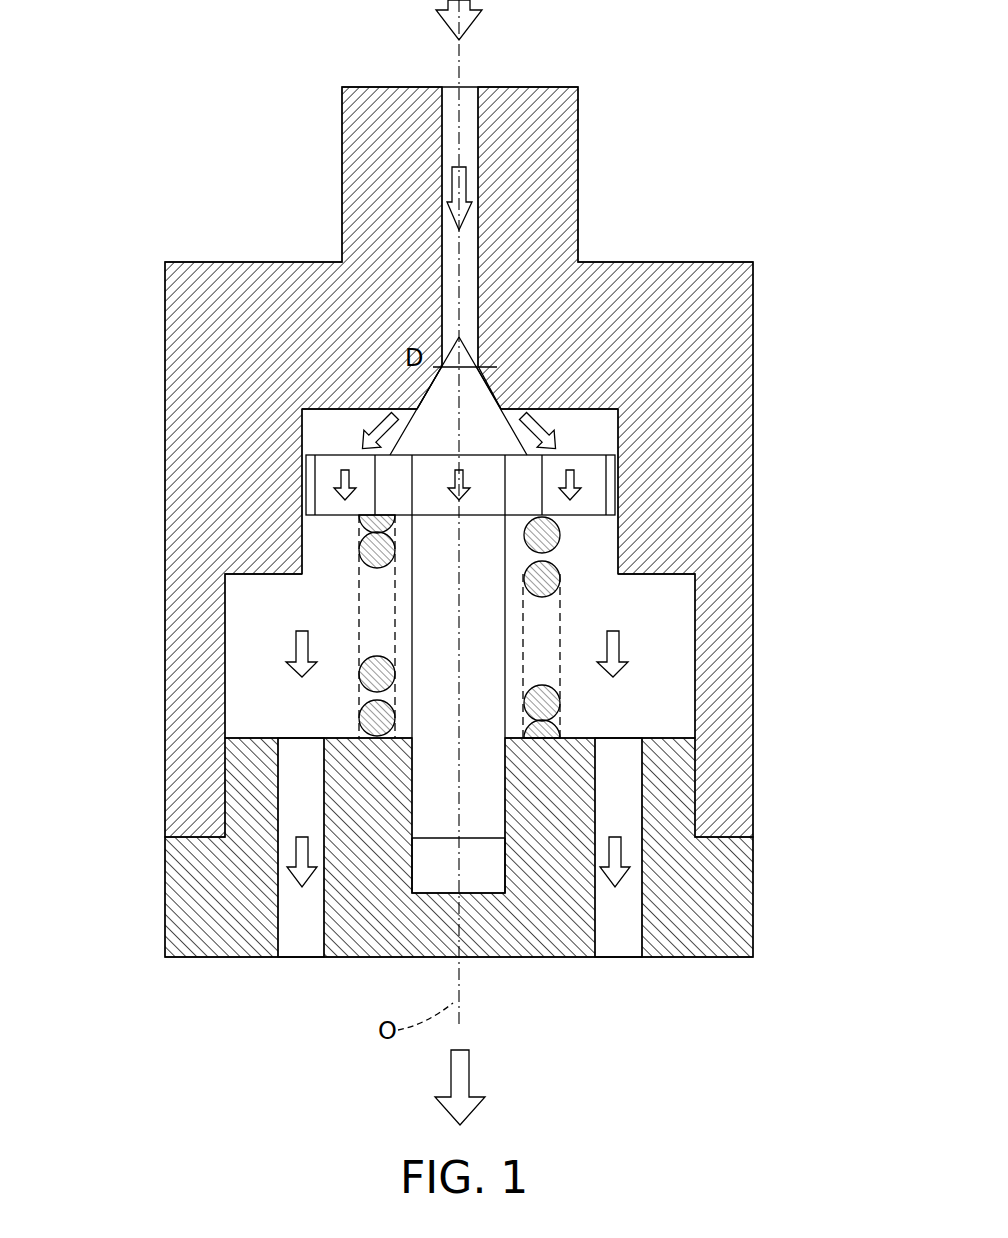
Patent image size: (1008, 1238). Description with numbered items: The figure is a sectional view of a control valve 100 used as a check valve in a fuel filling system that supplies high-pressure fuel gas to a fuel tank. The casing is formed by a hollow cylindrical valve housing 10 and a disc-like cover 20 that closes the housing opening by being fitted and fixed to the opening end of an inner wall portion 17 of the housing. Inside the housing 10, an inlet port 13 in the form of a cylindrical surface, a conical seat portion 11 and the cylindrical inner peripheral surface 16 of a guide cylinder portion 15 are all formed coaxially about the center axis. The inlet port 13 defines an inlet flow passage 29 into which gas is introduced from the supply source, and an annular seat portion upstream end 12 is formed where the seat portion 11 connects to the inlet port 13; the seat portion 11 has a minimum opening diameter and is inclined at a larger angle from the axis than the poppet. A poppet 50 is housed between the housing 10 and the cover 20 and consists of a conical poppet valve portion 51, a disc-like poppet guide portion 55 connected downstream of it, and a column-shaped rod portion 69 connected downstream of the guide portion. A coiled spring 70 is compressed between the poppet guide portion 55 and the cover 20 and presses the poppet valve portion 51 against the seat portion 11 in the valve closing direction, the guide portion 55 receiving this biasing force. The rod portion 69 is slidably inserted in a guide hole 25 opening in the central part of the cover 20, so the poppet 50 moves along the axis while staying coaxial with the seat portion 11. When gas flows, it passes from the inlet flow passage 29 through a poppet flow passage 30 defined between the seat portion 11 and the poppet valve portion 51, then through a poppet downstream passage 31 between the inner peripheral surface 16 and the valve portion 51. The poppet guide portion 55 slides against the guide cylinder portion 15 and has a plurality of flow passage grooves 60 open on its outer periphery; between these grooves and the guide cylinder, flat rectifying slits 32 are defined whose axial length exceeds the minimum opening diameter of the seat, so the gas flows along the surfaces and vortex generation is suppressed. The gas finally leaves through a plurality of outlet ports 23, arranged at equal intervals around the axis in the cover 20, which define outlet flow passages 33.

The control valve 100 is at (162, 178).
The valve housing 10 is at (175, 292).
The seat portion 11 is at (428, 395).
The seat portion upstream end 12 is at (438, 372).
The inlet port 13 is at (443, 232).
The guide cylinder portion 15 is at (262, 473).
The inner peripheral surface 16 is at (303, 440).
The inner wall portion 17 is at (226, 673).
The cover 20 is at (173, 942).
The outlet ports 23 is at (280, 845).
The guide hole 25 is at (415, 886).
The inlet flow passage 29 is at (467, 308).
The poppet flow passage 30 is at (497, 393).
The poppet downstream passage 31 is at (585, 432).
The rectifying slits 32 is at (617, 505).
The outlet flow passages 33 is at (625, 783).
The poppet 50 is at (440, 354).
The poppet valve portion 51 is at (385, 420).
The poppet guide portion 55 is at (318, 508).
The flow passage grooves 60 is at (300, 493).
The rod portion 69 is at (430, 823).
The spring 70 is at (360, 681).